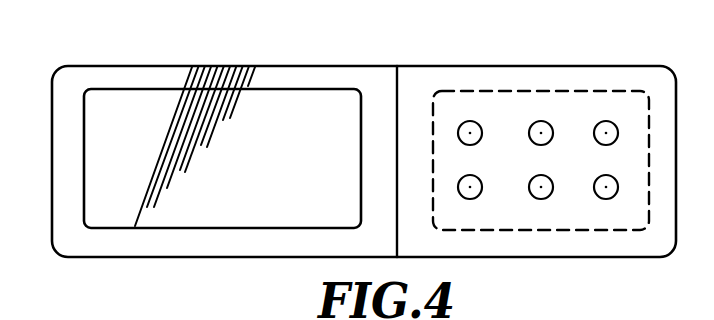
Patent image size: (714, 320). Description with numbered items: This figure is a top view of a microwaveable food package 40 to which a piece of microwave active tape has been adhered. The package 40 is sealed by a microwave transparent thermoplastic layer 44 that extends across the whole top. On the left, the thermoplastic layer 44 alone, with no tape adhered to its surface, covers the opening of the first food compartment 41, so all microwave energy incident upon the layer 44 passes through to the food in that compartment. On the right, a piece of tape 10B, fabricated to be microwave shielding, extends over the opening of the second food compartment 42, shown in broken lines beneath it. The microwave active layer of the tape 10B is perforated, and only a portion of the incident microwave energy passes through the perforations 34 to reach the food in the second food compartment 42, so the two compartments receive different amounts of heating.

The microwave shielding tape 10B is at (358, 156).
The microwave food package 40 is at (78, 257).
The first food compartment 41 is at (118, 98).
The microwave transparent thermoplastic layer 44 is at (313, 72).
The second food compartment 42 is at (572, 97).
The perforations 34 is at (604, 135).